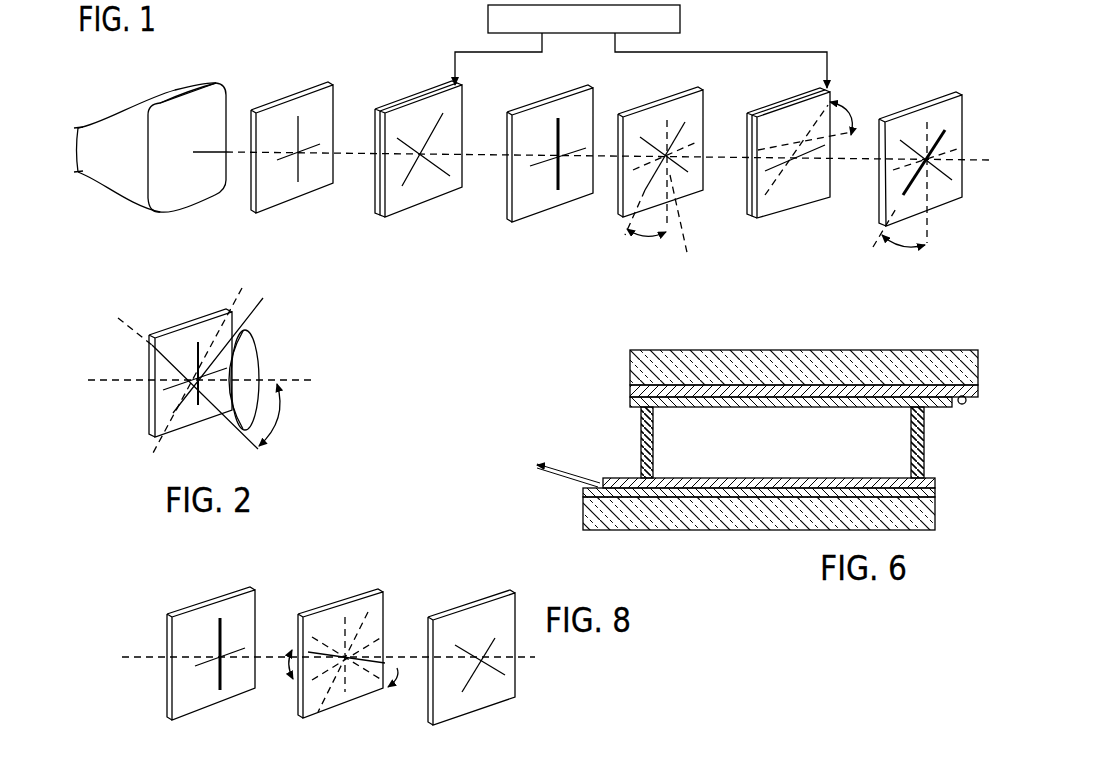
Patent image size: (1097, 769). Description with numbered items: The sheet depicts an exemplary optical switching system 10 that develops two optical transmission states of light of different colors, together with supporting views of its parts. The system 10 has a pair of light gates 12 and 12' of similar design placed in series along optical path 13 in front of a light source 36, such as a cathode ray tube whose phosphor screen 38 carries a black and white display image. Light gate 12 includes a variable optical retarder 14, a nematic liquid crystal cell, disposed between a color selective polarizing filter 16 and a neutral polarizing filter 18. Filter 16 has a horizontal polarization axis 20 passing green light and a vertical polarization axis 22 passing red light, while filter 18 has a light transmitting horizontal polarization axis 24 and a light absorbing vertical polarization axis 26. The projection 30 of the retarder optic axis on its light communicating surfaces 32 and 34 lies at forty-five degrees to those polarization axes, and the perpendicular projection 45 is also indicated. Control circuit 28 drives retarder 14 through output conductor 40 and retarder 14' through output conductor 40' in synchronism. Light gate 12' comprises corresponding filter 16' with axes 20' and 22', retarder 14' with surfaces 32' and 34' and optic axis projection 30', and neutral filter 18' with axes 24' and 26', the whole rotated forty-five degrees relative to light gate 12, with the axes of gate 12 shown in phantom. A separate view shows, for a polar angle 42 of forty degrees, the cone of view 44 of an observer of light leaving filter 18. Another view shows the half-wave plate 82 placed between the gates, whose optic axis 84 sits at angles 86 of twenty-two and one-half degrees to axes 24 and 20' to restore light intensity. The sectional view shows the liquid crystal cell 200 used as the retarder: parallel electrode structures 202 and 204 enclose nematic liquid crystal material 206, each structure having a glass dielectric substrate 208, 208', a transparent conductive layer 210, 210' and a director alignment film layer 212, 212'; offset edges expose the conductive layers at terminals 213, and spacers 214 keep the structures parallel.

In FIG. 1, the optical switching system 10 is at (578, 287).
In FIG. 1, the light gate 12 is at (443, 274).
In FIG. 1, the light gate 12' is at (815, 280).
In FIG. 1, the optical path 13 is at (248, 160).
In FIG. 2, the optical path 13 is at (121, 378).
In FIG. 8, the optical path 13 is at (153, 660).
In FIG. 1, the variable optical retarder 14 is at (414, 166).
In FIG. 1, the variable optical retarder 14' is at (783, 177).
In FIG. 1, the polarizing filter 16 is at (292, 167).
In FIG. 1, the polarizing filter 16' is at (627, 172).
In FIG. 8, the polarizing filter 16' is at (469, 674).
In FIG. 1, the polarizing filter 18 is at (548, 169).
In FIG. 2, the polarizing filter 18 is at (173, 374).
In FIG. 8, the polarizing filter 18 is at (210, 670).
In FIG. 1, the polarizing filter 18' is at (923, 179).
In FIG. 1, the horizontal polarization axis 20 is at (440, 133).
In FIG. 1, the polarization axis 20' is at (653, 113).
In FIG. 8, the polarization axis 20' is at (406, 659).
In FIG. 1, the vertical polarization axis 22 is at (477, 160).
In FIG. 1, the polarization axis 22' is at (675, 122).
In FIG. 8, the polarization axis 22' is at (420, 617).
In FIG. 1, the horizontal polarization axis 24 is at (706, 135).
In FIG. 2, the horizontal polarization axis 24 is at (191, 420).
In FIG. 8, the horizontal polarization axis 24 is at (249, 636).
In FIG. 1, the polarization axis 24' is at (955, 99).
In FIG. 1, the vertical polarization axis 26 is at (750, 145).
In FIG. 2, the vertical polarization axis 26 is at (171, 350).
In FIG. 8, the vertical polarization axis 26 is at (259, 623).
In FIG. 1, the polarization axis 26' is at (923, 121).
In FIG. 1, the control circuit 28 is at (488, 18).
In FIG. 1, the projection of the optic axis 30 is at (607, 157).
In FIG. 1, the projection of the optic axis 30' is at (805, 173).
In FIG. 1, the light communicating surface 32 is at (347, 209).
In FIG. 1, the light communicating surface 32' is at (726, 224).
In FIG. 1, the light communicating surface 34 is at (479, 79).
In FIG. 1, the light communicating surface 34' is at (853, 64).
In FIG. 1, the light source 36 is at (131, 205).
In FIG. 1, the phosphor screen 38 is at (226, 94).
In FIG. 1, the output conductor 40 is at (473, 55).
In FIG. 1, the output conductor 40' is at (721, 60).
In FIG. 2, the polar angle 42 is at (280, 418).
In FIG. 2, the cone of view 44 is at (253, 325).
In FIG. 1, the projection of the axis perpendicular to the optic axis projection 45 is at (421, 160).
In FIG. 8, the half-wave plate 82 is at (360, 705).
In FIG. 8, the optic axis 84 is at (376, 657).
In FIG. 8, the angles 86 is at (291, 681).
In FIG. 6, the liquid crystal cell 200 is at (578, 534).
In FIG. 6, the electrode structure 202 is at (765, 361).
In FIG. 6, the electrode structure 204 is at (717, 502).
In FIG. 6, the nematic liquid crystal material 206 is at (763, 448).
In FIG. 6, the glass dielectric substrate 208 is at (804, 349).
In FIG. 6, the glass dielectric substrate 208' is at (717, 513).
In FIG. 6, the conductive layer 210 is at (765, 382).
In FIG. 6, the conductive layer 210' is at (718, 491).
In FIG. 6, the director alignment film layer 212 is at (752, 398).
In FIG. 6, the director alignment film layer 212' is at (739, 455).
In FIG. 6, the terminals 213 is at (548, 462).
In FIG. 6, the spacers 214 is at (654, 450).